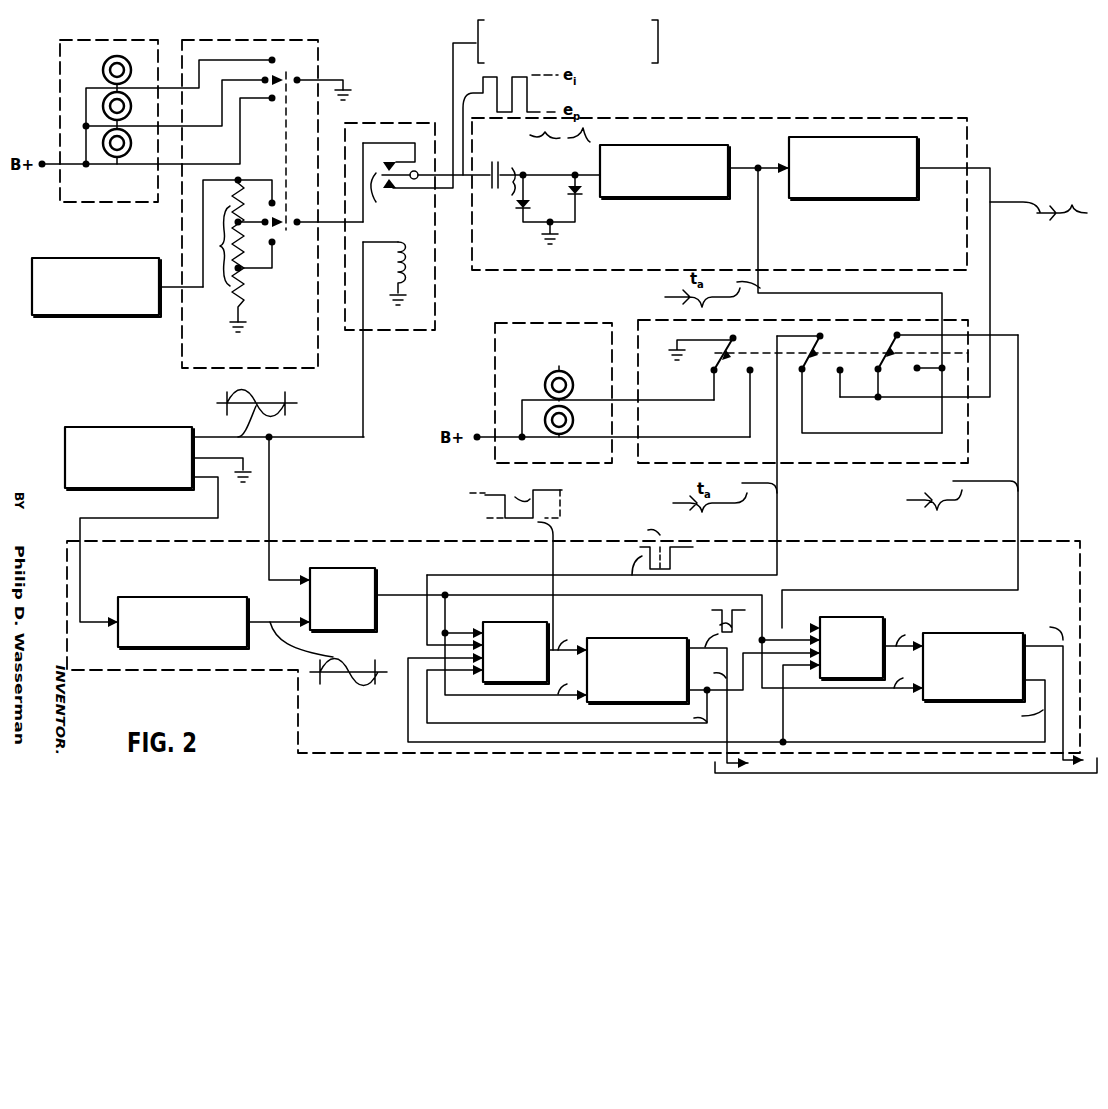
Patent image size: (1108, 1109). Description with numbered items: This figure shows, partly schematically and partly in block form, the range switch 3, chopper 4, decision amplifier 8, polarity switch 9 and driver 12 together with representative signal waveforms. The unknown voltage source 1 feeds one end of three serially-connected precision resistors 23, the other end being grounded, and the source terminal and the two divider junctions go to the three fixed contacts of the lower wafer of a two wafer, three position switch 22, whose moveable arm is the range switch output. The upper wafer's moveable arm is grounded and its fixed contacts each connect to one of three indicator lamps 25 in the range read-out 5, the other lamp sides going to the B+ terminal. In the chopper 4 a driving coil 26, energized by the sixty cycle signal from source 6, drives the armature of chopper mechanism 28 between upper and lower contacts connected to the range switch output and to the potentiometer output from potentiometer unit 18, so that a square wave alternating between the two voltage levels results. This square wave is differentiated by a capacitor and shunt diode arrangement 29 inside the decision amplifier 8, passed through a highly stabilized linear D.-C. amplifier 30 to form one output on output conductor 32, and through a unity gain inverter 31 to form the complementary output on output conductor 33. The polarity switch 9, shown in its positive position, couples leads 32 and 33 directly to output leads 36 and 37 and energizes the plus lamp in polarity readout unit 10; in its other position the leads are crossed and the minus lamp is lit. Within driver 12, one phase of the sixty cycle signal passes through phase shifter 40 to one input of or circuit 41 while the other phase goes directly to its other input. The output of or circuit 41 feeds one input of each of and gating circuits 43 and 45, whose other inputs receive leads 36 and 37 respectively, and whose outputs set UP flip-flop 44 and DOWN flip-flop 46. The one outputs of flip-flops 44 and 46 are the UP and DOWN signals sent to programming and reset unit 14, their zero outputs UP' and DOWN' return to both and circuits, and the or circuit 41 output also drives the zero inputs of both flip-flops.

The unknown voltage source 1 is at (32, 287).
The range switch 3 is at (185, 354).
The chopper 4 is at (417, 330).
The range read-out 5 is at (113, 202).
The 60 c.p.s. source 6 is at (118, 427).
The decision amplifier 8 is at (660, 272).
The polarity switch 9 is at (690, 466).
The polarity readout unit 10 is at (496, 374).
The driver 12 is at (416, 541).
The programming and reset unit 14 is at (907, 773).
The potentiometer unit 18 is at (568, 41).
The two wafer, three position switch 22 is at (292, 186).
The precision resistors 23 is at (232, 250).
The indicator lamps 25 is at (92, 110).
The driving coil 26 is at (401, 262).
The chopper mechanism 28 is at (426, 132).
The capacitor and shunt diode arrangement 29 is at (539, 203).
The D.-C. amplifier 30 is at (658, 145).
The unity gain inverter 31 is at (917, 146).
The output conductor 32 is at (796, 294).
The output conductor 33 is at (993, 306).
The output lead 36 is at (779, 510).
The output lead 37 is at (1018, 506).
The phase shifter 40 is at (208, 597).
The or circuit 41 is at (345, 568).
The and gating circuit 43 is at (512, 622).
The UP flip-flop 44 is at (634, 638).
The and gating circuit 45 is at (872, 617).
The DOWN flip-flop 46 is at (960, 633).